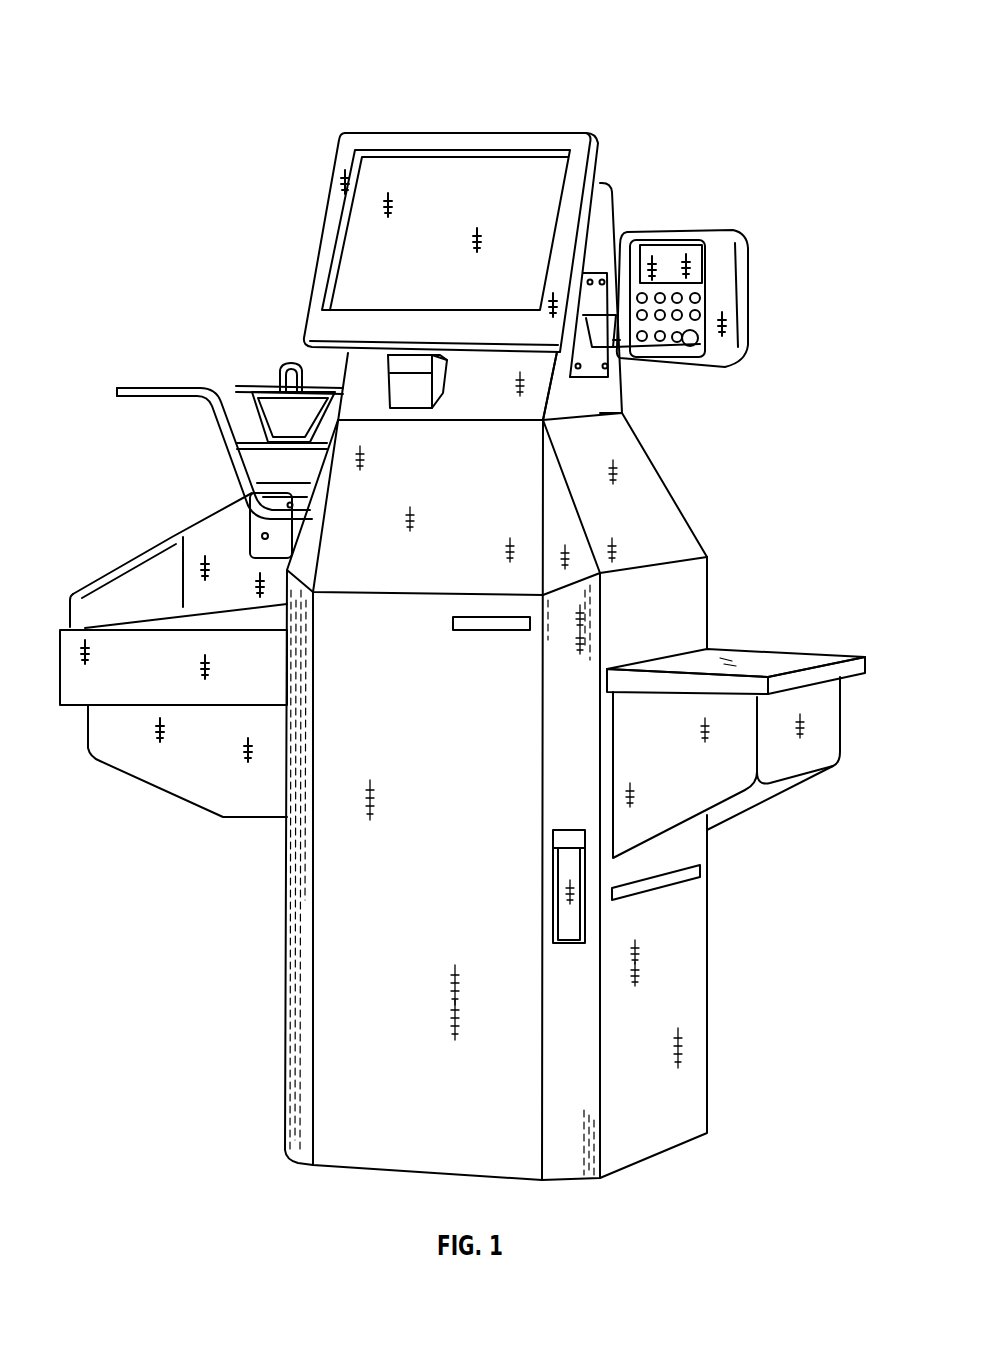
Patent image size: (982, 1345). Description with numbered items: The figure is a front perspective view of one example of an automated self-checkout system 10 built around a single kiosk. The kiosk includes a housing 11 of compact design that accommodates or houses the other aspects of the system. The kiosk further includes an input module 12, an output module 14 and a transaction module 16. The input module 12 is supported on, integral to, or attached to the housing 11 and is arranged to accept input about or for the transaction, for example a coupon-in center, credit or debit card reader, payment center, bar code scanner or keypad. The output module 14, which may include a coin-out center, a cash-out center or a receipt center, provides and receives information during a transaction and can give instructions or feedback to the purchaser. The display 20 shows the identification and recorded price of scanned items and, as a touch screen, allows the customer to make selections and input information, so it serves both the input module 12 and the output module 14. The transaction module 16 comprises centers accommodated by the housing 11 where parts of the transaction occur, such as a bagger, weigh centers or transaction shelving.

The self-checkout system 10 is at (628, 112).
The housing 11 is at (295, 960).
The input module 12 is at (420, 387).
The output module 14 is at (535, 620).
The transaction module 16 is at (683, 228).
The display 20 is at (395, 263).